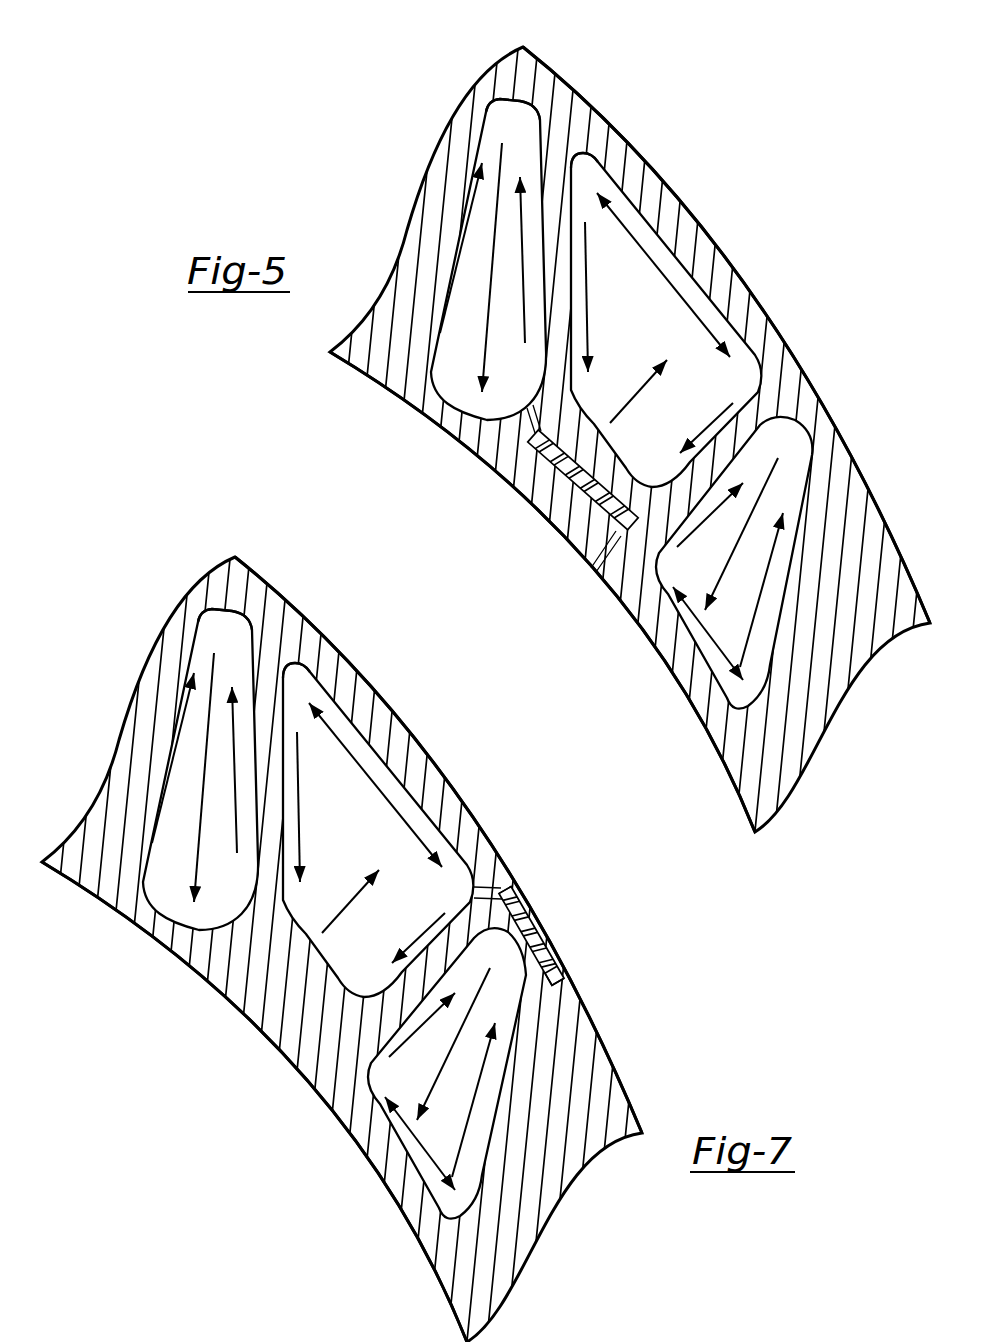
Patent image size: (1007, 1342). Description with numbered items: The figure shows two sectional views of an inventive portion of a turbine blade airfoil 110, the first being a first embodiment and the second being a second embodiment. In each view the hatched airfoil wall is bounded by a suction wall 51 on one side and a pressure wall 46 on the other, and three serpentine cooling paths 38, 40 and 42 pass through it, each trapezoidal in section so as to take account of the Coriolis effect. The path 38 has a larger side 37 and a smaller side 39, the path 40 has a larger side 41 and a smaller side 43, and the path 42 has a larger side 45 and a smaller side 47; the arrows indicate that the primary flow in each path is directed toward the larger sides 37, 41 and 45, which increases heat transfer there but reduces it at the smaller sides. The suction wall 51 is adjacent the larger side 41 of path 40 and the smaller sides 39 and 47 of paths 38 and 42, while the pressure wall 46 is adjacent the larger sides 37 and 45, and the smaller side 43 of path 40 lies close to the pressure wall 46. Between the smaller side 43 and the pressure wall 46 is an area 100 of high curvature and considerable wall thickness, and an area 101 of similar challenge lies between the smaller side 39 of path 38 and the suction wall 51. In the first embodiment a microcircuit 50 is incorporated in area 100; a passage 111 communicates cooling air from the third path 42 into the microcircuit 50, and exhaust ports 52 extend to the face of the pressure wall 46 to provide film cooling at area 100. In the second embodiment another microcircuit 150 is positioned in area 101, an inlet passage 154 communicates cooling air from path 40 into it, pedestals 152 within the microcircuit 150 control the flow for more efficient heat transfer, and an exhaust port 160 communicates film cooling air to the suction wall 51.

In FIG. 5, the impeller blade 110 is at (727, 135).
In FIG. 7, the impeller blade 110 is at (361, 946).
In FIG. 5, the suction wall 51 is at (710, 225).
In FIG. 7, the suction wall 51 is at (438, 845).
In FIG. 5, the pressure wall 46 is at (517, 493).
In FIG. 7, the pressure wall 46 is at (254, 1102).
In FIG. 5, the third path 42 is at (442, 362).
In FIG. 7, the third path 42 is at (200, 769).
In FIG. 5, the smaller side 47 is at (520, 97).
In FIG. 7, the smaller side 47 is at (240, 583).
In FIG. 5, the second path 40 is at (704, 379).
In FIG. 7, the second path 40 is at (378, 830).
In FIG. 5, the larger side 41 is at (623, 193).
In FIG. 7, the larger side 41 is at (309, 683).
In FIG. 5, the smaller side 43 is at (598, 405).
In FIG. 7, the smaller side 43 is at (313, 823).
In FIG. 5, the area 100 is at (622, 430).
In FIG. 7, the area 100 is at (383, 916).
In FIG. 5, the smaller side 39 is at (802, 392).
In FIG. 7, the smaller side 39 is at (471, 908).
In FIG. 5, the larger side 45 is at (457, 390).
In FIG. 7, the larger side 45 is at (123, 922).
In FIG. 5, the path 38 is at (782, 492).
In FIG. 7, the path 38 is at (447, 1073).
In FIG. 5, the larger side 37 is at (707, 670).
In FIG. 7, the larger side 37 is at (348, 1164).
In FIG. 5, the microcircuit 50 is at (543, 476).
In FIG. 5, the passage 111 is at (528, 406).
In FIG. 5, the exhaust ports 52 is at (593, 573).
In FIG. 7, the microcircuit 150 is at (537, 931).
In FIG. 7, the pedestals 152 is at (576, 939).
In FIG. 7, the exhaust port 160 is at (588, 955).
In FIG. 7, the inlet passage 154 is at (497, 860).
In FIG. 7, the area 101 is at (525, 843).